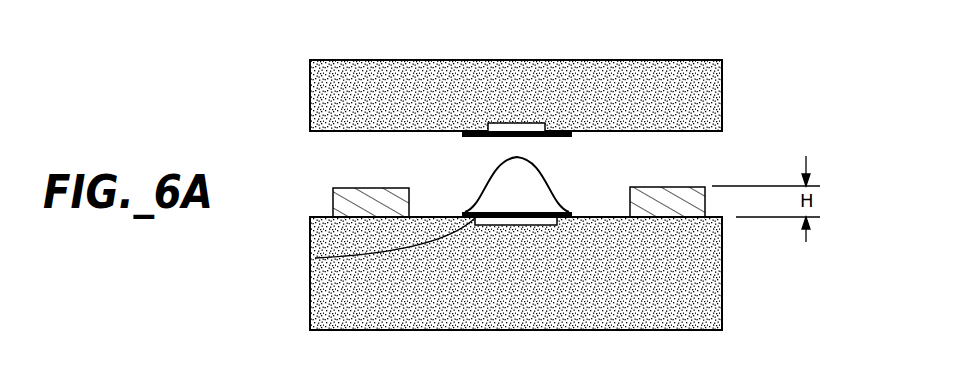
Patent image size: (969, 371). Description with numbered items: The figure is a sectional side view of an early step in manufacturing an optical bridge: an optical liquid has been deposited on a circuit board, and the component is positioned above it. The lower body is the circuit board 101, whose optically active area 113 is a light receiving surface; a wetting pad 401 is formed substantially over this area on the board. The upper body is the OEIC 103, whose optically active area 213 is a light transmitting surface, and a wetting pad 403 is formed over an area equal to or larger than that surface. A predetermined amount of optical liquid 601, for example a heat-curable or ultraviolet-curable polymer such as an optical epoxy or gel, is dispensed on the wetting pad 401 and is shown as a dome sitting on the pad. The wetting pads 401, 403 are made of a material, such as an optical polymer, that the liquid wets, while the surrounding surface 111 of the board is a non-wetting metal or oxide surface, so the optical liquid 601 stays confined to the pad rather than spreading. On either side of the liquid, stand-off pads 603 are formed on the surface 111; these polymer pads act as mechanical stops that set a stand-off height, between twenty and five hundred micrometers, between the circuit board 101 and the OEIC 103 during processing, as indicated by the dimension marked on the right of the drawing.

The circuit board 101 is at (722, 280).
The OEIC 103 is at (722, 98).
The surface 111 is at (448, 217).
The optically active area 113 is at (315, 258).
The optically active area 213 is at (497, 123).
The wetting pad 401 is at (565, 215).
The wetting pad 403 is at (556, 131).
The optical liquid 601 is at (507, 182).
The stand-off pads 603 is at (333, 200).